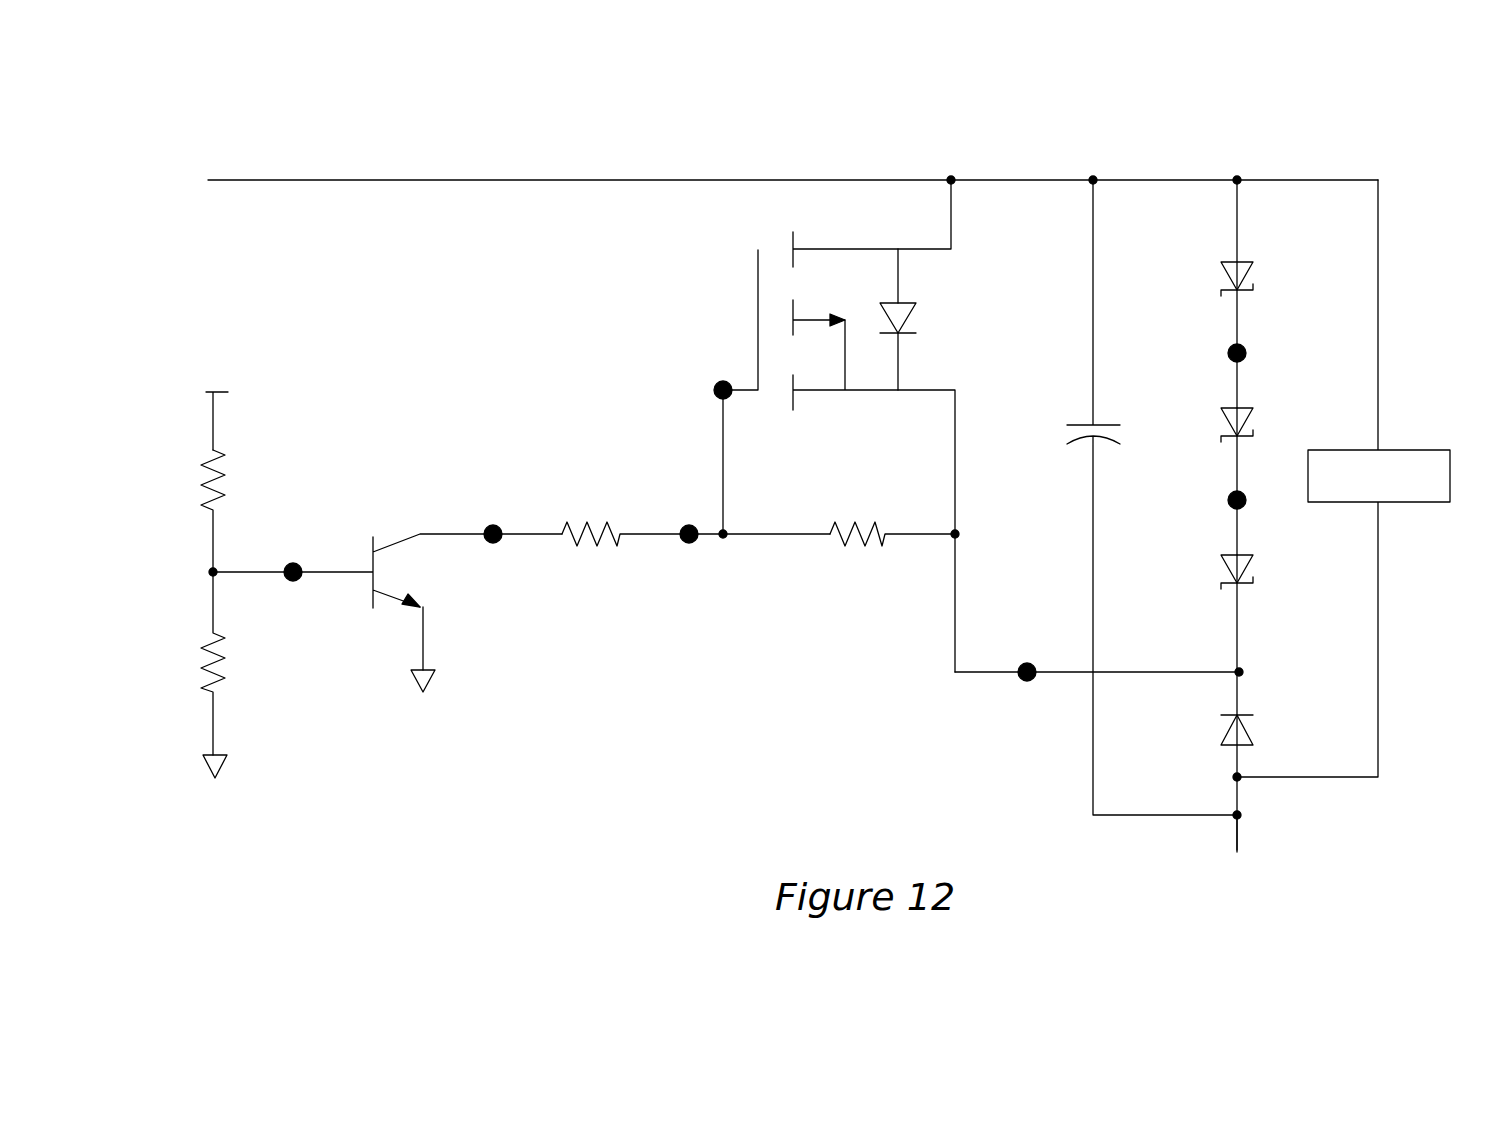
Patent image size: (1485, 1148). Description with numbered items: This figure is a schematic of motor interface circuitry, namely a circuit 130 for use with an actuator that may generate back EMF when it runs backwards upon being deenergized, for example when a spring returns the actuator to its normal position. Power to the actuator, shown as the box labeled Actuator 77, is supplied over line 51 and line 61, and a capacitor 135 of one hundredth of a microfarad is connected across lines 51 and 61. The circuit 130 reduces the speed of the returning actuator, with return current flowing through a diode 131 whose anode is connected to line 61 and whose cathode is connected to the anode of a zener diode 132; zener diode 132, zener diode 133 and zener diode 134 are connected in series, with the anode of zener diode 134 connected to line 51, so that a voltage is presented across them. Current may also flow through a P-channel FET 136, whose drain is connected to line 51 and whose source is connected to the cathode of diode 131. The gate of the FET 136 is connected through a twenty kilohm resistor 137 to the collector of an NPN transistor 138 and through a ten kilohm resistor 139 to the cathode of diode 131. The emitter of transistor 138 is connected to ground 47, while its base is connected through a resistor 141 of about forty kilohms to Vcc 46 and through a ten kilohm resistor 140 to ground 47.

The circuit 130 is at (1128, 112).
The line 51 is at (520, 180).
The Vcc 46 is at (208, 394).
The resistor 141 is at (202, 490).
The resistor 140 is at (202, 682).
The ground 47 is at (207, 772).
The NPN transistor 138 is at (390, 573).
The resistor 137 is at (585, 522).
The resistor 139 is at (860, 545).
The P-channel FET 136 is at (948, 308).
The capacitor 135 is at (1083, 425).
The zener diode 134 is at (1255, 270).
The zener diode 133 is at (1255, 415).
The zener diode 132 is at (1255, 562).
The diode 131 is at (1253, 732).
The actuator 77 is at (1413, 450).
The line 61 is at (1240, 837).